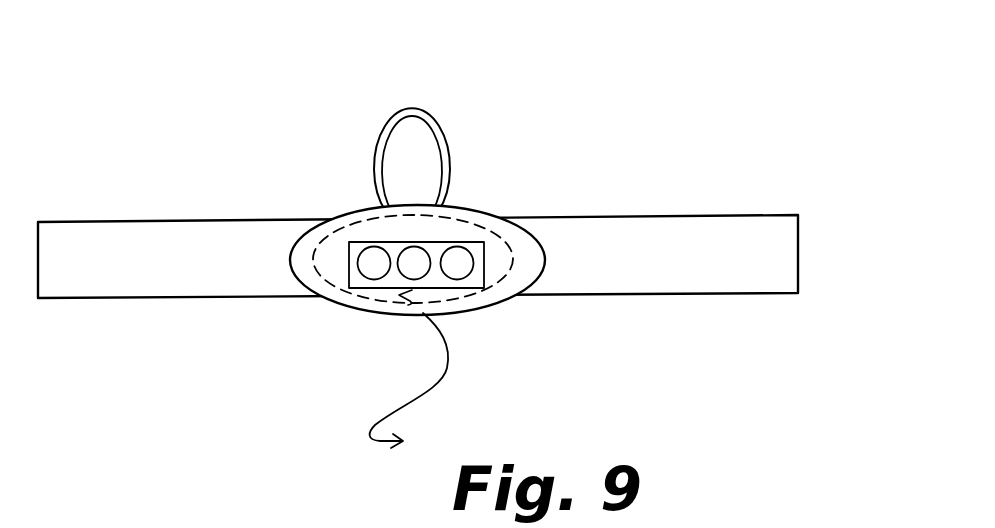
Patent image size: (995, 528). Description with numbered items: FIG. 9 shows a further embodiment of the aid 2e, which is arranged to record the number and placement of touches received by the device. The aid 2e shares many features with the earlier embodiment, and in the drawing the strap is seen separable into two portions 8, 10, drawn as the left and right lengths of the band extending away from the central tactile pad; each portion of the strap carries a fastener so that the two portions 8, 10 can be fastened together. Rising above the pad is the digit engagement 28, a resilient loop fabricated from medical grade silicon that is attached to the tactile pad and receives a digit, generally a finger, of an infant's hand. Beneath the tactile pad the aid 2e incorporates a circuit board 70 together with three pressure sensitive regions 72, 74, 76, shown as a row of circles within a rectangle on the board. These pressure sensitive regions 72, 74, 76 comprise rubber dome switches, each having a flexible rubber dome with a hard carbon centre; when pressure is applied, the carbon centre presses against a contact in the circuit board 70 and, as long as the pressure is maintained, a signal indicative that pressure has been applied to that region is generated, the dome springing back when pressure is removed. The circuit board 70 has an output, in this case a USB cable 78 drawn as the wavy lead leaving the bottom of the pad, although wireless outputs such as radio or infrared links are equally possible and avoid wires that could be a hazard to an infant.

The aid 2e is at (418, 263).
The strap portion 8 is at (203, 271).
The strap portion 10 is at (681, 263).
The digit engagement 28 is at (445, 112).
The circuit board 70 is at (470, 243).
The pressure sensitive region 72 is at (460, 281).
The pressure sensitive region 74 is at (395, 279).
The pressure sensitive region 76 is at (374, 281).
The USB cable 78 is at (447, 368).